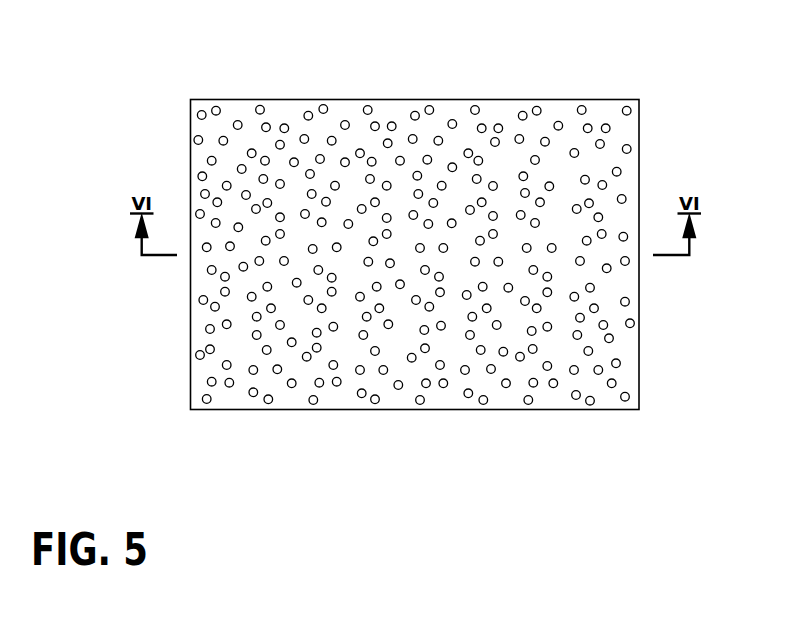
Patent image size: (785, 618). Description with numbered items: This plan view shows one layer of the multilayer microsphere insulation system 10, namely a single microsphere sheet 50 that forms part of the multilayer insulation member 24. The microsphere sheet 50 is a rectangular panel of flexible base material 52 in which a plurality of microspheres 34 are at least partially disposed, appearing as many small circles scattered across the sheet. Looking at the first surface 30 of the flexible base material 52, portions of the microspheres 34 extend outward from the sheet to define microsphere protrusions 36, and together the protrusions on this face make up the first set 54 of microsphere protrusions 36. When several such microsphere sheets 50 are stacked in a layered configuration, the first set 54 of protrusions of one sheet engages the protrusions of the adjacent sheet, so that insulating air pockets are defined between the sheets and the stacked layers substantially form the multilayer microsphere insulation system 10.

The multilayer microsphere insulation system 10 is at (466, 95).
The multilayer insulation member 24 is at (281, 105).
The first surface 30 is at (495, 391).
The microspheres 34 is at (582, 105).
The microsphere protrusions 36 is at (629, 145).
The microsphere sheet 50 is at (198, 338).
The flexible base material 52 is at (324, 391).
The first set of microsphere protrusions 54 is at (372, 104).